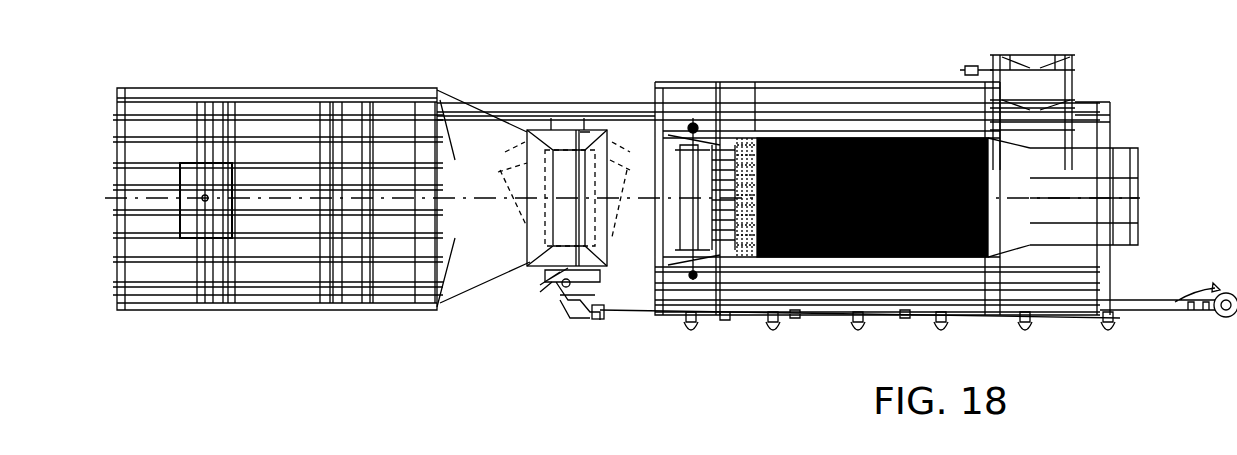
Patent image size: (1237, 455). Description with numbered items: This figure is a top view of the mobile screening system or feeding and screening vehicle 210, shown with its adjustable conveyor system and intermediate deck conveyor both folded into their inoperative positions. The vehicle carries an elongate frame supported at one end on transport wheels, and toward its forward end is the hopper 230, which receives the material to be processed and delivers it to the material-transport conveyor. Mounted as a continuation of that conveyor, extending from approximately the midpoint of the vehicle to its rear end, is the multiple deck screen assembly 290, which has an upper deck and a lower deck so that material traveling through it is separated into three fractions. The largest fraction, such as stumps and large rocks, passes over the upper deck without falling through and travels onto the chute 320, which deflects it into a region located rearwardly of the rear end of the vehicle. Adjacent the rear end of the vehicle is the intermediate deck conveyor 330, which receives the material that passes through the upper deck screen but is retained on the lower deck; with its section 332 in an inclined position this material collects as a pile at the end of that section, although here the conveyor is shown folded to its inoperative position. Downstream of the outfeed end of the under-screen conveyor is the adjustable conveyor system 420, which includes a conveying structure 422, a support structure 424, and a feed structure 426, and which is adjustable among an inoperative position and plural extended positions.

The mobile screening system 210 is at (252, 55).
The hopper 230 is at (108, 86).
The multiple deck screen assembly 290 is at (853, 128).
The chute 320 is at (1138, 184).
The intermediate deck conveyor 330 is at (1083, 92).
The section 332 is at (1030, 95).
The adjustable conveyor system 420 is at (548, 315).
The conveying structure 422 is at (756, 326).
The support structure 424 is at (545, 270).
The feed structure 426 is at (572, 126).